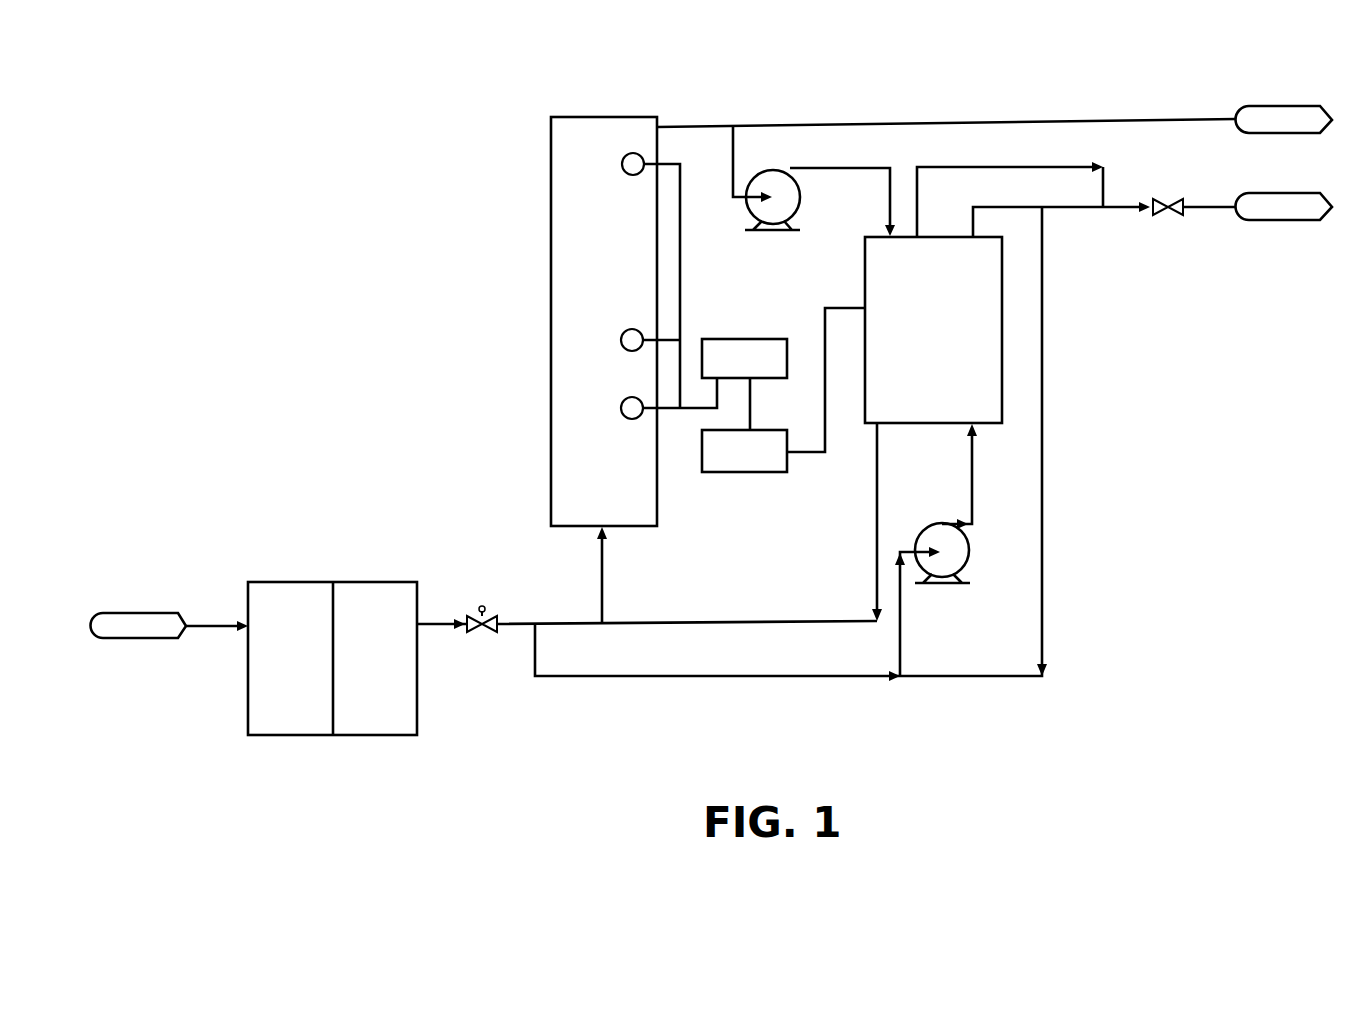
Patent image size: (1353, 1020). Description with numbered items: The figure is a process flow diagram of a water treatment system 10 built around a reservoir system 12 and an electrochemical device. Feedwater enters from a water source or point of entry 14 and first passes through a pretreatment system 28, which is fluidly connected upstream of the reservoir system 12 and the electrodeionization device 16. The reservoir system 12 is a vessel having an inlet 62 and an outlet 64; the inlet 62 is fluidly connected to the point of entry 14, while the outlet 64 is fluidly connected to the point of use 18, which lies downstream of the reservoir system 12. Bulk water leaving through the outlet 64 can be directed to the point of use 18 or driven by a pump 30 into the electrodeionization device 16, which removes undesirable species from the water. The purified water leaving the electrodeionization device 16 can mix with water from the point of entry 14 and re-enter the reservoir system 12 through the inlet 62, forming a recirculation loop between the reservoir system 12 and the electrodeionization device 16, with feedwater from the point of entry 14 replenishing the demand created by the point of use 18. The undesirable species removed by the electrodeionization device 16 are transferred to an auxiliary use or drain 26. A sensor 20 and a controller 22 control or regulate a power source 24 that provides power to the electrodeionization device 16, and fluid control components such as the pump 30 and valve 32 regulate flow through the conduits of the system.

The water treatment system 10 is at (308, 156).
The reservoir system 12 is at (550, 308).
The point of entry 14 is at (120, 612).
The electrodeionization device 16 is at (1000, 340).
The point of use 18 is at (1272, 108).
The sensor 20 is at (632, 420).
The controller 22 is at (727, 338).
The power source 24 is at (765, 473).
The drain 26 is at (1285, 221).
The pretreatment system 28 is at (417, 715).
The pump 30 is at (798, 190).
The valve 32 is at (1181, 214).
The inlet 62 is at (608, 528).
The outlet 64 is at (665, 125).